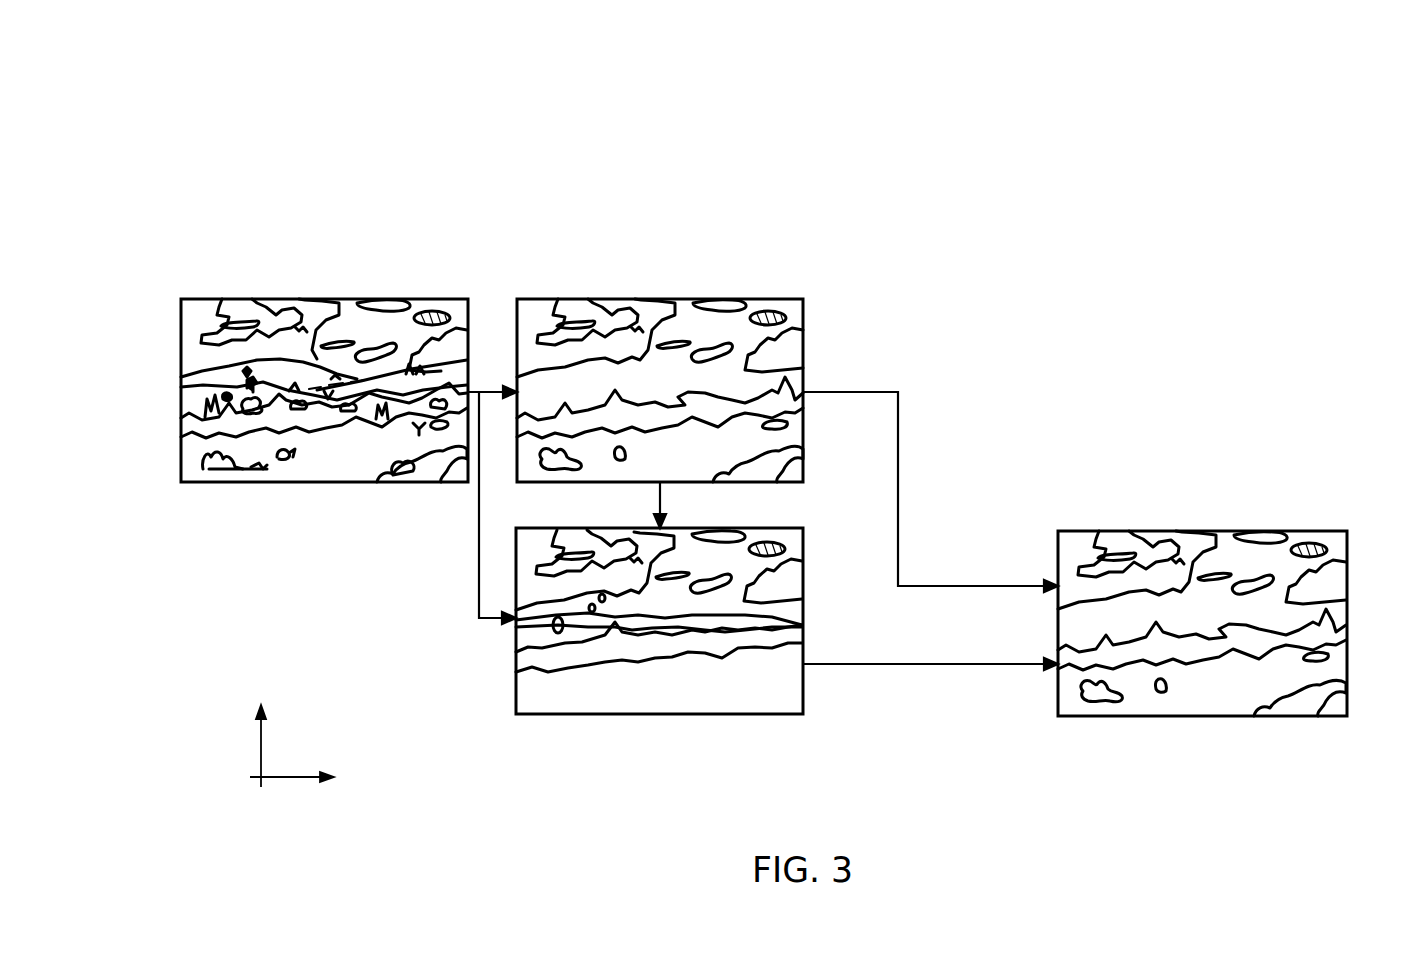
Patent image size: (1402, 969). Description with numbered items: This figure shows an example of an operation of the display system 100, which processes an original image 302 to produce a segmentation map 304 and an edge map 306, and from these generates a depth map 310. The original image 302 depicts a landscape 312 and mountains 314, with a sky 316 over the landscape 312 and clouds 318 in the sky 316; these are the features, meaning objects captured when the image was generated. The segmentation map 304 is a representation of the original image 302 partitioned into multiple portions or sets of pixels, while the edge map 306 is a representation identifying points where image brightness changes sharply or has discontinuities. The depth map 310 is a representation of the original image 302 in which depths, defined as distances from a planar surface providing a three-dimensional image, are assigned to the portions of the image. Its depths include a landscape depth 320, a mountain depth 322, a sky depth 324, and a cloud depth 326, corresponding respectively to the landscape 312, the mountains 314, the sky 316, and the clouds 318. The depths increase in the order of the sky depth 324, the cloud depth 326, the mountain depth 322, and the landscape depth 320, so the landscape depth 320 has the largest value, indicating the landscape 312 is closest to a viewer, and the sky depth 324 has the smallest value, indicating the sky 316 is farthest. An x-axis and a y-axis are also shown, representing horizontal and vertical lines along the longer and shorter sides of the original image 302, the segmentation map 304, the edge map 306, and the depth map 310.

The display system 100 is at (260, 104).
The original image 302 is at (354, 483).
The segmentation map 304 is at (773, 299).
The edge map 306 is at (645, 715).
The depth map 310 is at (1268, 717).
The landscape 312 is at (309, 489).
The mountains 314 is at (383, 304).
The sky 316 is at (324, 286).
The clouds 318 is at (374, 278).
The landscape depth 320 is at (1179, 722).
The mountain depth 322 is at (1224, 544).
The sky depth 324 is at (1157, 519).
The cloud depth 326 is at (1216, 476).